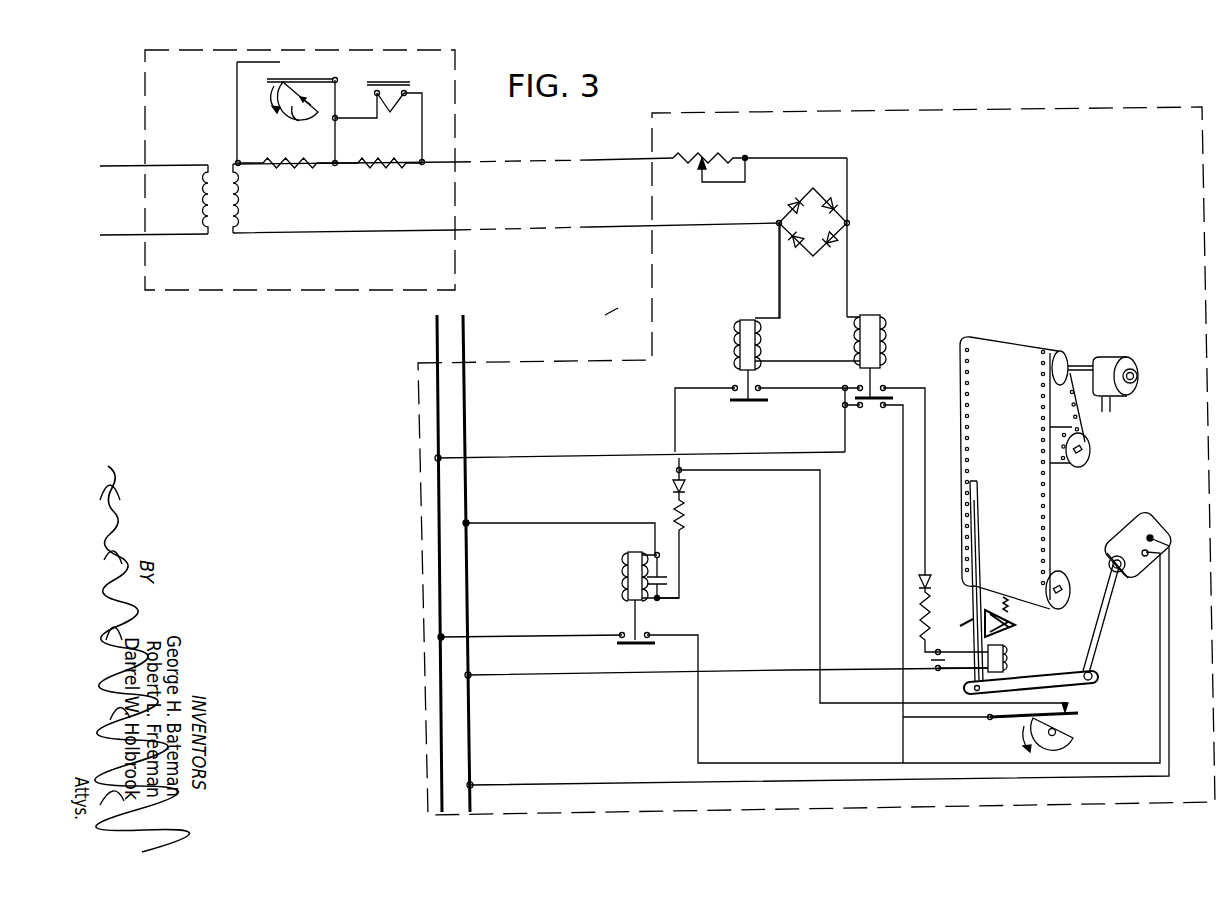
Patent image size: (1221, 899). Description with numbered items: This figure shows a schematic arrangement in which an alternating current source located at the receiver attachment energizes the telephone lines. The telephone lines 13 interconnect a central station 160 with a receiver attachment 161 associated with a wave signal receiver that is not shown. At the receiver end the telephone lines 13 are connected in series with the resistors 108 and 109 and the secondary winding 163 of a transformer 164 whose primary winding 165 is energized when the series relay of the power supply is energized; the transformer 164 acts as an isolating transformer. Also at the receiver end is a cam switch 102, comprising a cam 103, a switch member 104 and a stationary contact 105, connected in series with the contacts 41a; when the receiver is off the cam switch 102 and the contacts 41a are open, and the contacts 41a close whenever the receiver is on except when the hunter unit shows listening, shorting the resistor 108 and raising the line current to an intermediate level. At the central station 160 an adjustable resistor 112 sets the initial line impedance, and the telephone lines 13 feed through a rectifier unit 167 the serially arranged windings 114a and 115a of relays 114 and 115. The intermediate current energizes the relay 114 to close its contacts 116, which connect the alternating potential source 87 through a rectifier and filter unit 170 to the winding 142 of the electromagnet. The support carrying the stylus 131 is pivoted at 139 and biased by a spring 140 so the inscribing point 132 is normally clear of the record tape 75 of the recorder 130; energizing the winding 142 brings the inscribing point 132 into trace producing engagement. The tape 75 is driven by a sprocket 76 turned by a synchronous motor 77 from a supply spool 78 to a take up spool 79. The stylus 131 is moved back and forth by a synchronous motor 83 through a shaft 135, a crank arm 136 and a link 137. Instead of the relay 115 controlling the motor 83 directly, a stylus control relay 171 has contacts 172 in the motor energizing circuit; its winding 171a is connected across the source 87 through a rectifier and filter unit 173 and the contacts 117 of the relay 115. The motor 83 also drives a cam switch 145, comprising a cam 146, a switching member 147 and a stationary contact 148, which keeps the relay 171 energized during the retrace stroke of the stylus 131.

The receiver attachment 161 is at (146, 70).
The telephone lines 13 is at (480, 227).
The transformer 164 is at (217, 181).
The primary winding 165 is at (203, 200).
The secondary winding 163 is at (240, 206).
The resistor 109 is at (278, 160).
The resistor 108 is at (397, 159).
The switch member 104 is at (328, 80).
The cam switch 102 is at (320, 75).
The cam 103 is at (291, 116).
The stationary contact 105 is at (279, 76).
The contacts 41a is at (378, 122).
The central station 160 is at (751, 114).
The adjustable resistor 112 is at (695, 185).
The rectifier unit 167 is at (781, 218).
The relay 115 is at (774, 311).
The relay winding 115a is at (739, 342).
The contacts 117 is at (760, 386).
The relay 114 is at (882, 341).
The relay winding 114a is at (878, 346).
The contacts 116 is at (885, 386).
The source of alternating potential 87 is at (437, 408).
The rectifier and filter unit 173 is at (669, 512).
The stylus control relay 171 is at (629, 584).
The relay winding 171a is at (627, 582).
The contacts 172 is at (649, 634).
The rectifier and filter unit 170 is at (958, 607).
The switching member 147 is at (1080, 716).
The stationary contact 148 is at (1069, 704).
The cam 146 is at (1071, 742).
The cam switch 145 is at (1012, 741).
The link 137 is at (1040, 681).
The crank arm 136 is at (1109, 614).
The shaft 135 is at (1108, 582).
The synchronous motor 83 is at (1148, 500).
The electromagnet winding 142 is at (1004, 651).
The pivot 139 is at (1016, 633).
The spring 140 is at (1006, 599).
The inscribing point 132 is at (997, 562).
The stylus 131 is at (980, 530).
The recorder 130 is at (1023, 462).
The recording element 75 is at (1050, 500).
The sprocket 76 is at (1066, 356).
The synchronous motor 77 is at (1122, 360).
The take up spool 79 is at (1090, 450).
The supply spool 78 is at (1062, 570).